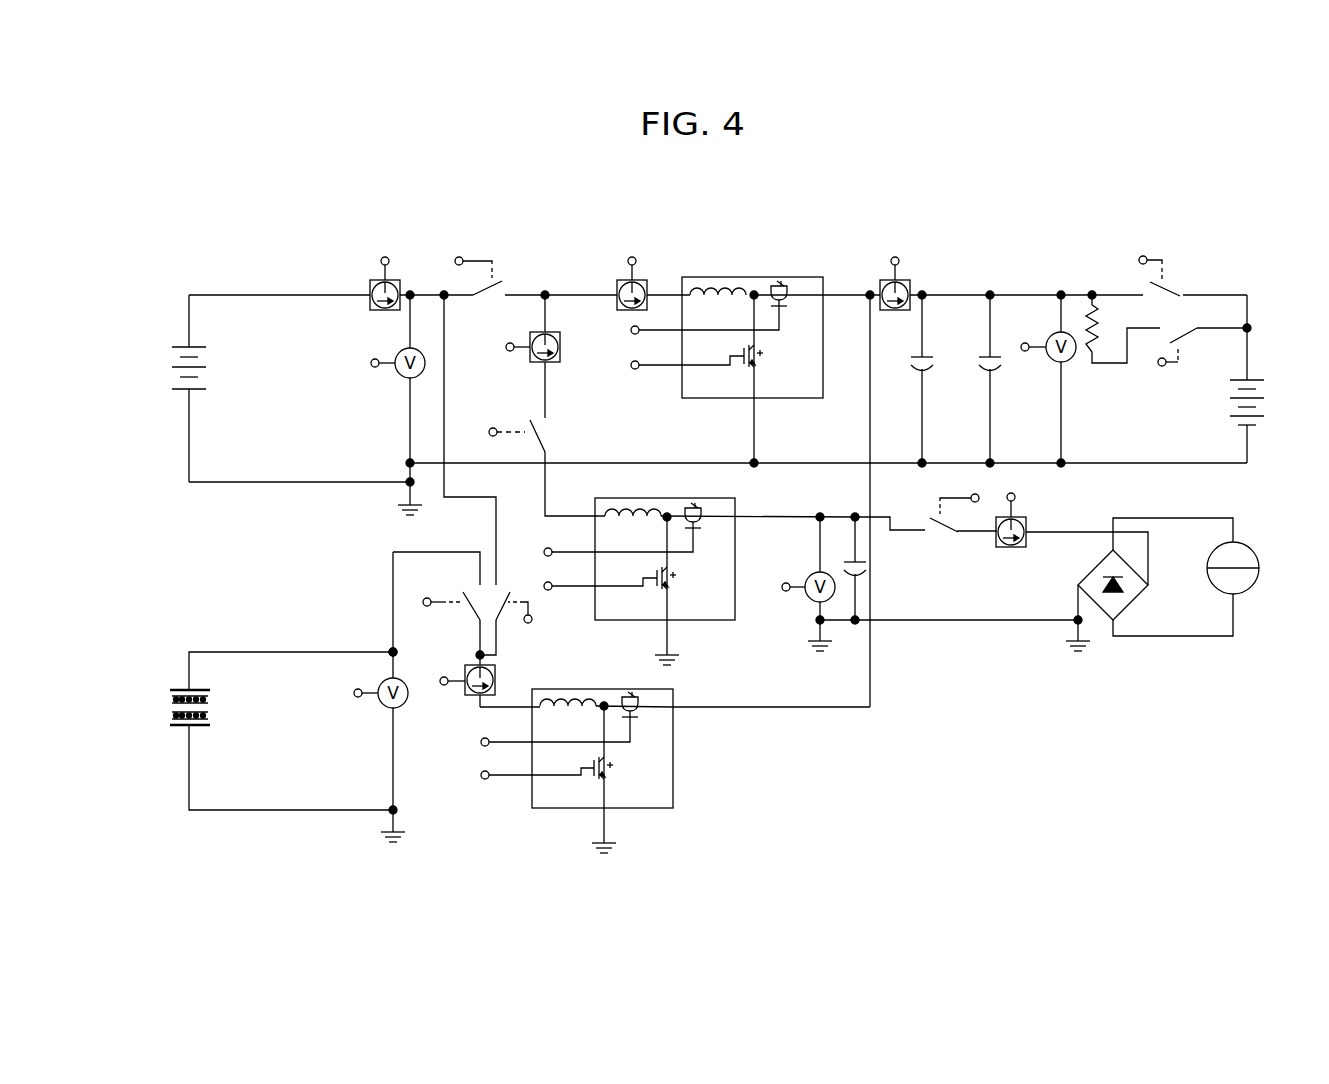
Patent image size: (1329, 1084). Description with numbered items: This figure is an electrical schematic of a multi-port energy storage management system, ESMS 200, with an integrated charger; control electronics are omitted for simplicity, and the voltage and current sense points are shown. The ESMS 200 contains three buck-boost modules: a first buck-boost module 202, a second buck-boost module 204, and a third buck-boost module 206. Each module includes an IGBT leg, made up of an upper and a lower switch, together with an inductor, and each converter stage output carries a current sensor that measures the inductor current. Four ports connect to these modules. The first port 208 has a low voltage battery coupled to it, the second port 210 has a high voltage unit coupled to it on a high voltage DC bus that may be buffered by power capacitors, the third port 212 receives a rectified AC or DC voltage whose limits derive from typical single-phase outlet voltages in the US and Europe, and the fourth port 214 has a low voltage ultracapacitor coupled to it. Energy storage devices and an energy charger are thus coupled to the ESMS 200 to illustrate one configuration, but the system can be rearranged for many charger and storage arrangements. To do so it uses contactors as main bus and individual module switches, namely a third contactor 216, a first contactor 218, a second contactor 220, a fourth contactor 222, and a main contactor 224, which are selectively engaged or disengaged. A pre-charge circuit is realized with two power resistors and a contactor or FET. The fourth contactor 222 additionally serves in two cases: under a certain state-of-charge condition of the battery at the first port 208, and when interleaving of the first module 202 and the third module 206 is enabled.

The ESMS 200 is at (1010, 152).
The first buck-boost module 202 is at (760, 234).
The second buck-boost module 204 is at (793, 679).
The third buck-boost module 206 is at (670, 878).
The port P1 208 is at (403, 207).
The port P2 210 is at (1061, 219).
The port P3 212 is at (1034, 768).
The port P4 214 is at (286, 847).
The contactor K3 216 is at (489, 416).
The contactor K1 218 is at (495, 241).
The contactor K2 220 is at (418, 597).
The contactor K4 222 is at (550, 648).
The contactor M 224 is at (1132, 250).